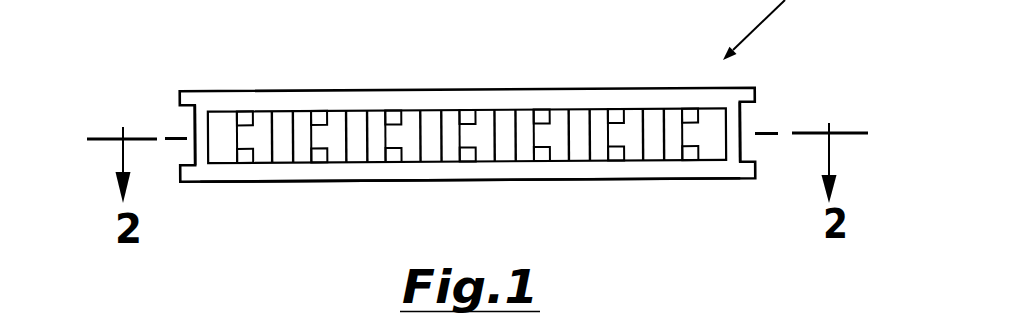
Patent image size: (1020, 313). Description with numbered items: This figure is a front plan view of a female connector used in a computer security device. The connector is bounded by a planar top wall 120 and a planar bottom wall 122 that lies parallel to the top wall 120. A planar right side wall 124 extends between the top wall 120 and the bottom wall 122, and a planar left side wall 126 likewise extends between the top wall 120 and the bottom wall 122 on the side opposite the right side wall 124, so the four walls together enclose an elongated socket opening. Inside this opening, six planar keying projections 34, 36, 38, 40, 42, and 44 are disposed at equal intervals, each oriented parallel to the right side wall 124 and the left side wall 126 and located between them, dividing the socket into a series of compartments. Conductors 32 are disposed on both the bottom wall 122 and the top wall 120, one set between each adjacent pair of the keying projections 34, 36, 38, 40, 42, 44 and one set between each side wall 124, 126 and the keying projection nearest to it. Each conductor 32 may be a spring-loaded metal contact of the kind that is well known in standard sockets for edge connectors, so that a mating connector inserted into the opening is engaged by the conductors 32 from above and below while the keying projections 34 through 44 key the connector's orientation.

The top wall 120 is at (728, 87).
The bottom wall 122 is at (726, 181).
The right side wall 124 is at (737, 124).
The left side wall 126 is at (192, 131).
The conductors 32 is at (450, 179).
The keying projection 34 is at (282, 120).
The keying projection 36 is at (352, 120).
The keying projection 38 is at (425, 120).
The keying projection 40 is at (503, 118).
The keying projection 42 is at (580, 118).
The keying projection 44 is at (653, 118).